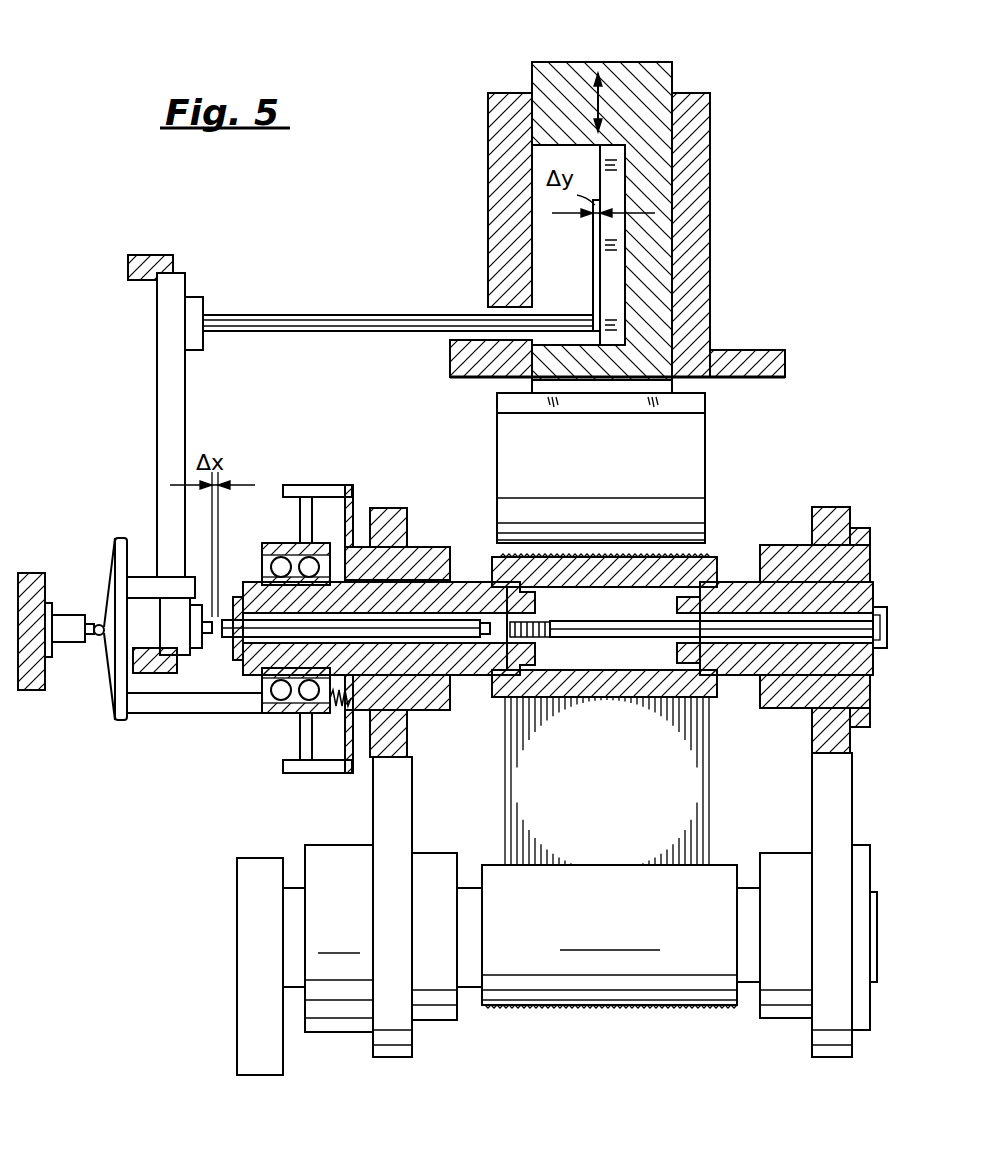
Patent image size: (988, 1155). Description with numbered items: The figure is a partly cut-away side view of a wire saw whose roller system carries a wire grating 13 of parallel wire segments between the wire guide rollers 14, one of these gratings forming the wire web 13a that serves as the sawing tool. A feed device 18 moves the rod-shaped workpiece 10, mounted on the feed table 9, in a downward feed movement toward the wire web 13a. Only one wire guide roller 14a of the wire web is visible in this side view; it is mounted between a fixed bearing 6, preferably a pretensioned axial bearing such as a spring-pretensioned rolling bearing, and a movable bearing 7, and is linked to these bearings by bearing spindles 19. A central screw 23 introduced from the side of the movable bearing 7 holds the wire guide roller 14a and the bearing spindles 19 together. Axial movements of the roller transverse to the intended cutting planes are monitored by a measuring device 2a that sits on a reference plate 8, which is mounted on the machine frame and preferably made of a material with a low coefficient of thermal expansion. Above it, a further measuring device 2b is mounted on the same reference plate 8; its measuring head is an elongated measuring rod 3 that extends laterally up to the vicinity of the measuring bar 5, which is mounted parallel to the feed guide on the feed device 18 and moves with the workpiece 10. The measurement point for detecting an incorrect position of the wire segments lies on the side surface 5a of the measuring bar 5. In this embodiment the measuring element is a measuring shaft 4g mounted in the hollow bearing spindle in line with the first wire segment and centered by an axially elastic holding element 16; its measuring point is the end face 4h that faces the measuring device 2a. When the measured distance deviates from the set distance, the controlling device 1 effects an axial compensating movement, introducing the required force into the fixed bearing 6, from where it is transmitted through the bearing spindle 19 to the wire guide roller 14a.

The controlling device 1 is at (72, 625).
The measuring device 2a is at (197, 650).
The further measuring device 2b is at (196, 304).
The measuring rod 3 is at (282, 317).
The measuring shaft 4g is at (430, 627).
The end face 4h is at (223, 638).
The measuring bar 5 is at (613, 232).
The side surface 5a is at (597, 268).
The fixed bearing 6 is at (318, 560).
The movable bearing 7 is at (788, 702).
The reference plate 8 is at (180, 402).
The feed table 9 is at (700, 405).
The workpiece 10 is at (700, 468).
The wire grating 13 is at (710, 800).
The wire web 13a is at (690, 548).
The wire guide roller 14 is at (503, 997).
The wire guide roller of the wire web 14a is at (495, 560).
The axially elastic holding element 16 is at (226, 614).
The feed device 18 is at (640, 78).
The bearing spindle 19 is at (468, 660).
The central screw 23 is at (886, 625).